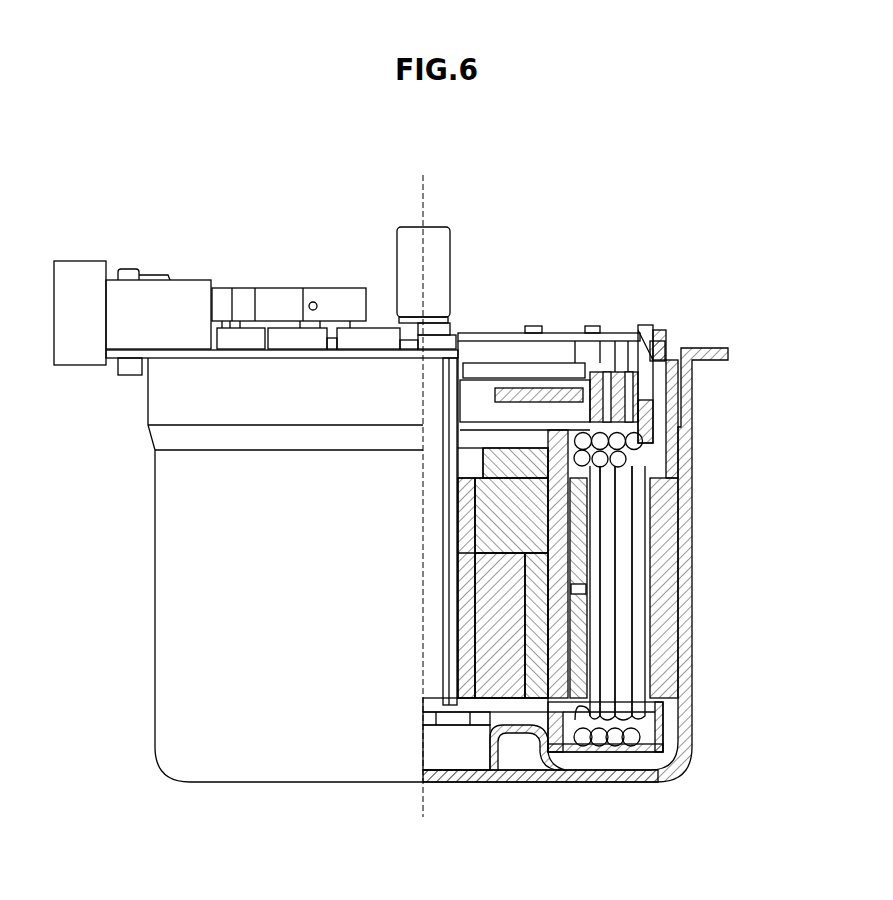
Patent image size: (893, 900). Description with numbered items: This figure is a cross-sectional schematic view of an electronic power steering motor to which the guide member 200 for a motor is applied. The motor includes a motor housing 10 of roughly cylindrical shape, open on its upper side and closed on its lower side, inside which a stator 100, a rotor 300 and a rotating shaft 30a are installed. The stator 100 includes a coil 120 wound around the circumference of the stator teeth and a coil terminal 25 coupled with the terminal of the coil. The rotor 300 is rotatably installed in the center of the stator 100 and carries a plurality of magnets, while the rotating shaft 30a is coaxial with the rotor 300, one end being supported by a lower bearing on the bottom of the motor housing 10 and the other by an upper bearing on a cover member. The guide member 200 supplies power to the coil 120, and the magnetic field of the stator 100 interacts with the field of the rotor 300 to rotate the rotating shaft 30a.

The motor housing 10 is at (178, 592).
The rotating shaft 30a is at (433, 228).
The guide member for a motor 200 is at (549, 328).
The coil terminal 25 is at (653, 326).
The rotor 300 is at (513, 657).
The coil 120 is at (638, 555).
The stator 100 is at (663, 597).